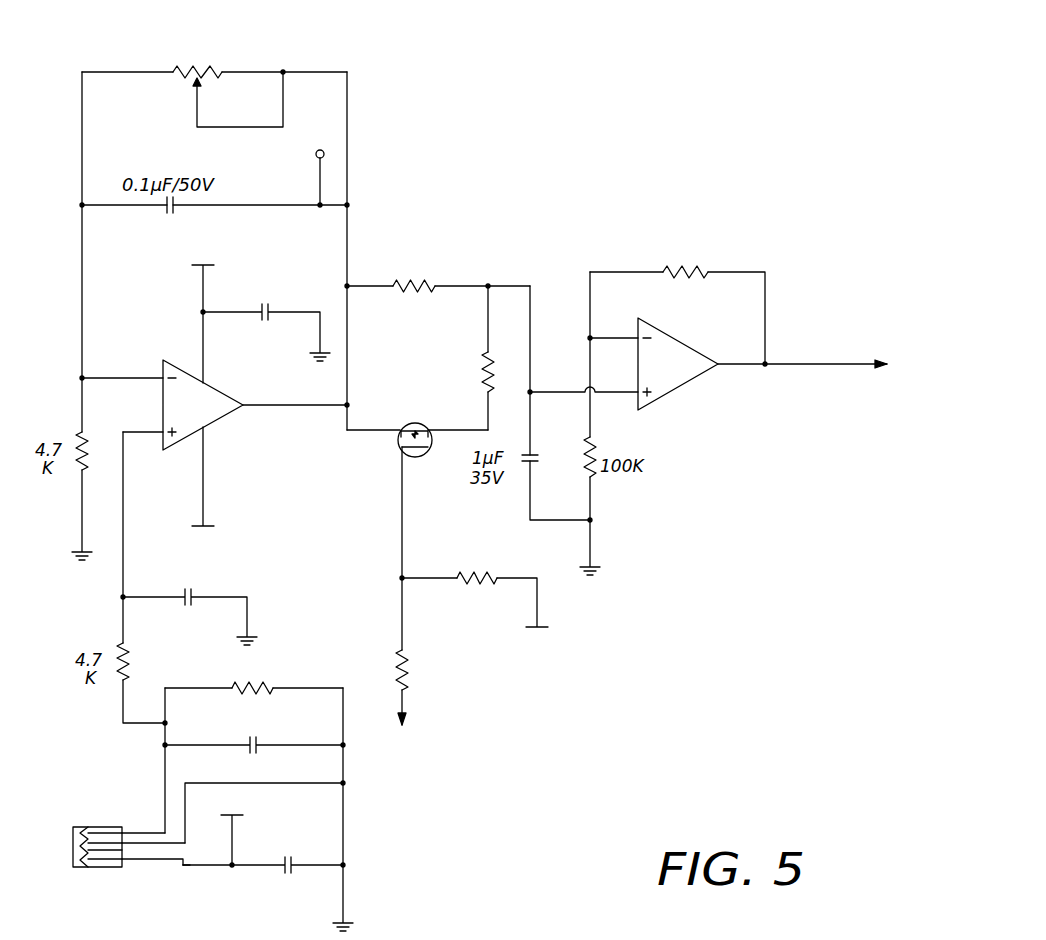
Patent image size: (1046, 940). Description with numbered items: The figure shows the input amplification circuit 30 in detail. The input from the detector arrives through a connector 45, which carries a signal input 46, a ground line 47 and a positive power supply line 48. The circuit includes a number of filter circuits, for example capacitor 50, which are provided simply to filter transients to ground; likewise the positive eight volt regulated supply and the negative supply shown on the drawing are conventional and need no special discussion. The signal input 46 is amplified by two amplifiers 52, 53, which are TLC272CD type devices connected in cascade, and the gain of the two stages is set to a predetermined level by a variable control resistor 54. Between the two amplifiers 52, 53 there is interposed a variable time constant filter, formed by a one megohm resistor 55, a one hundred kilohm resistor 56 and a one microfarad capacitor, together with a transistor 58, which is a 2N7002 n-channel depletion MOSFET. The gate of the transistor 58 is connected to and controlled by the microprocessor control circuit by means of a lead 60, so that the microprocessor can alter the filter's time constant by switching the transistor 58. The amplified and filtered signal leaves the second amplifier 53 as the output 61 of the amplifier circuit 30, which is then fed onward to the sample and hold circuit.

The input amplification circuit 30 is at (678, 104).
The connector 45 is at (100, 867).
The signal input 46 is at (165, 763).
The ground line 47 is at (307, 783).
The positive power supply line 48 is at (183, 865).
The capacitor 50 is at (202, 592).
The amplifier 52 is at (221, 418).
The amplifier 53 is at (665, 330).
The variable control resistor 54 is at (248, 66).
The 1 MΩ resistor 55 is at (437, 273).
The 100 kΩ resistor 56 is at (477, 368).
The transistor 58 is at (398, 446).
The lead 60 is at (405, 703).
The output 61 is at (827, 366).